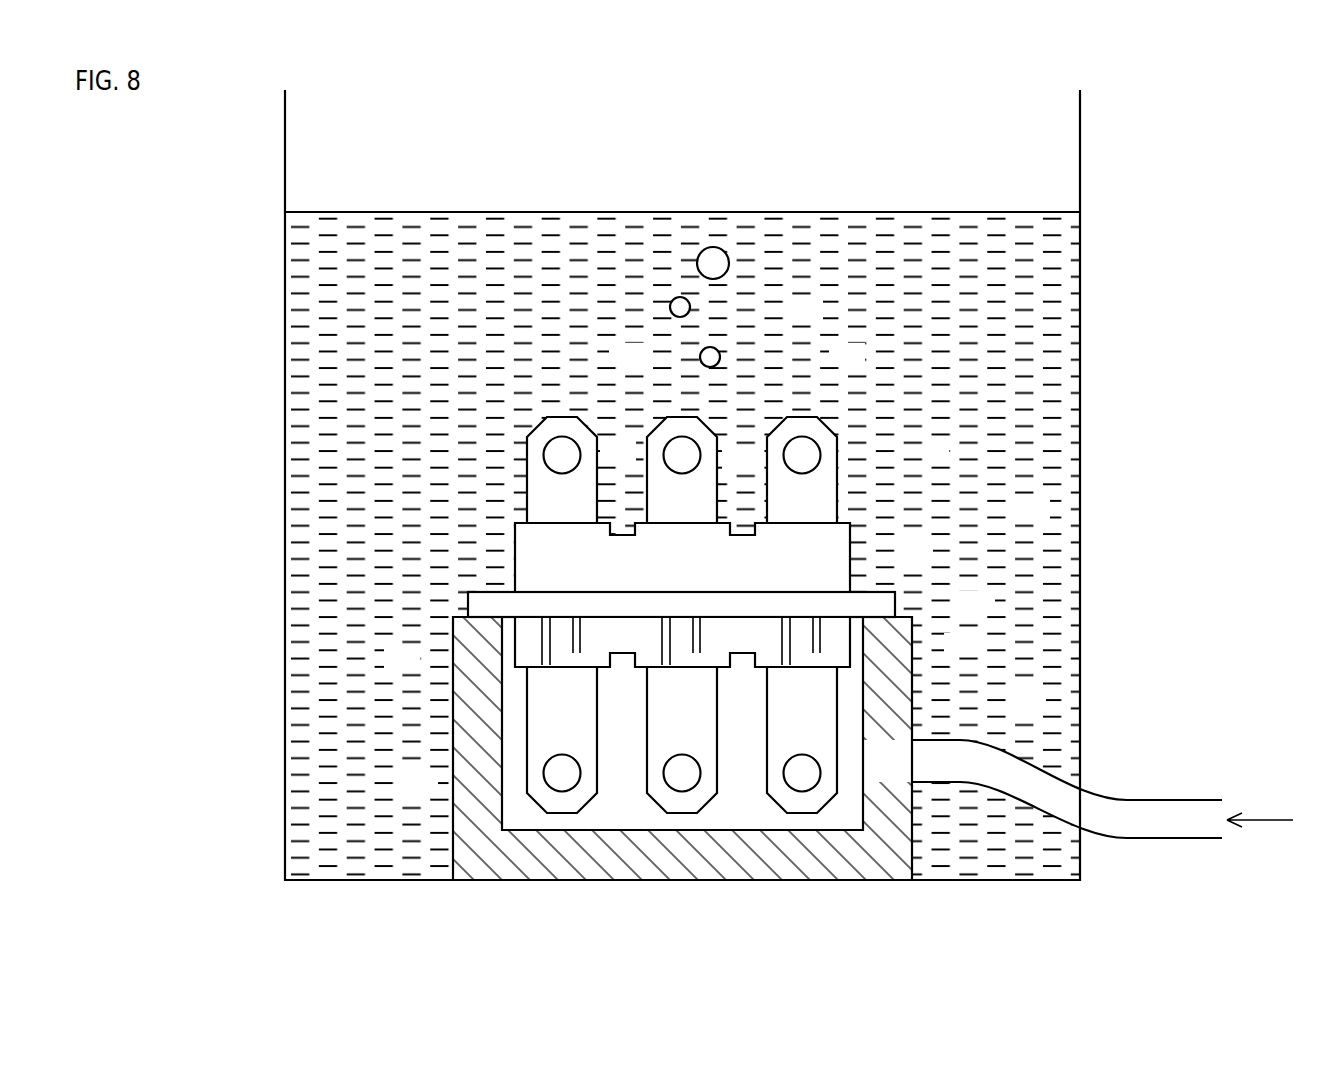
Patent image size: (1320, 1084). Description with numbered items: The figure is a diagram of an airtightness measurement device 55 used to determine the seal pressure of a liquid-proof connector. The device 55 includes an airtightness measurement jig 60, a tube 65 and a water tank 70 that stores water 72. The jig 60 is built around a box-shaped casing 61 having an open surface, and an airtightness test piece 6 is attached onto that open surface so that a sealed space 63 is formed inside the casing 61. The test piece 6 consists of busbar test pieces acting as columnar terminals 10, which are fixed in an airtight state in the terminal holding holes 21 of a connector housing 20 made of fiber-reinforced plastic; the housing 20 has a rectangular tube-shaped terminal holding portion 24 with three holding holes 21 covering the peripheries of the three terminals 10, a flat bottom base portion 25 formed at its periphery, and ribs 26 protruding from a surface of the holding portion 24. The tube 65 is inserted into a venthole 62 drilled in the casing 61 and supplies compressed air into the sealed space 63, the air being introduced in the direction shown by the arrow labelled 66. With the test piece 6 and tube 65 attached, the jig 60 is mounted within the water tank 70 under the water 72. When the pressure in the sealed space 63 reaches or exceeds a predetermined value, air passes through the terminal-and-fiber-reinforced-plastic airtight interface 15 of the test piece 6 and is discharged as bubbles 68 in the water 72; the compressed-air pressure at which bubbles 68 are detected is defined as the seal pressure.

The airtightness test piece 6 is at (716, 635).
The columnar terminal 10 is at (675, 417).
The terminal-and-fiber-reinforced-plastic airtight interface 15 is at (646, 520).
The connector housing 20 is at (716, 617).
The terminal holding hole 21 is at (840, 545).
The terminal holding portion 24 is at (850, 635).
The bottom base portion 25 is at (897, 600).
The rib 26 is at (547, 638).
The airtightness measurement device 55 is at (765, 485).
The airtightness measurement jig 60 is at (757, 781).
The box-shaped casing 61 is at (912, 827).
The venthole 62 is at (922, 782).
The sealed space 63 is at (739, 781).
The tube 65 is at (1172, 800).
The pressurized air 66 is at (1265, 825).
The bubbles 68 is at (682, 297).
The water tank 70 is at (1080, 280).
The water 72 is at (1038, 380).